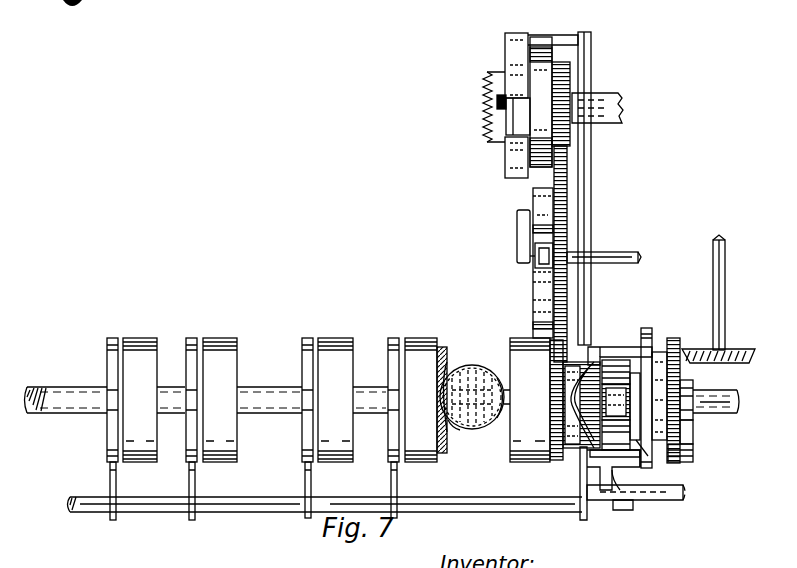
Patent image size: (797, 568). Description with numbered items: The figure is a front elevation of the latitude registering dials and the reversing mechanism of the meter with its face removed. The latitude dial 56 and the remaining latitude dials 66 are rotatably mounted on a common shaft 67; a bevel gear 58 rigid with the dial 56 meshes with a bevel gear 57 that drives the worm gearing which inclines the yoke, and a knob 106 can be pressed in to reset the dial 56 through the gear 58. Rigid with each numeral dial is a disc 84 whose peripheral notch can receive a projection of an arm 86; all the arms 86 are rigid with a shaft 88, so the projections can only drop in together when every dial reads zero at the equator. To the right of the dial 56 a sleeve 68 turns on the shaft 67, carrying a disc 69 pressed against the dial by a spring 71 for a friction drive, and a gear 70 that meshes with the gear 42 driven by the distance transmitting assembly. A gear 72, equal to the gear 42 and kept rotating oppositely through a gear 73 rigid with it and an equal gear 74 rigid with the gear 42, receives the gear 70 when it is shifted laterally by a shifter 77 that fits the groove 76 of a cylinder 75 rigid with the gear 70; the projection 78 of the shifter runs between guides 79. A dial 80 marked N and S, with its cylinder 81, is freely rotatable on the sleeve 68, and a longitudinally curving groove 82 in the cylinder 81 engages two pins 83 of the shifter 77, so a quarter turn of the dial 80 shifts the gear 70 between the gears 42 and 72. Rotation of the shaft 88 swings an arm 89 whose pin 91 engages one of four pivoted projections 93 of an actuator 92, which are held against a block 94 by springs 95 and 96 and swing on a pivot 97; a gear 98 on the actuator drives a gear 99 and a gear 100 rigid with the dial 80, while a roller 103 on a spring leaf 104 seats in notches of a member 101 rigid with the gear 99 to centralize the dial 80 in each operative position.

The gear 42 is at (692, 440).
The latitude dial 56 is at (426, 338).
The bevel gear 57 is at (500, 375).
The bevel gear 58 is at (442, 348).
The latitude dials 66 is at (151, 338).
The shaft 67 is at (258, 393).
The sleeve 68 is at (696, 388).
The disc 69 is at (447, 364).
The gear 70 is at (680, 458).
The spring 71 is at (505, 425).
The gear 72 is at (646, 328).
The gear 73 is at (663, 345).
The gear 74 is at (636, 388).
The cylinder 75 is at (630, 430).
The circumferential groove 76 is at (650, 450).
The shifter 77 is at (637, 468).
The projection 78 is at (625, 511).
The guides 79 is at (662, 501).
The dial 80 is at (522, 338).
The cylinder 81 is at (566, 450).
The groove 82 is at (576, 406).
The pins 83 is at (593, 355).
The disc 84 is at (111, 339).
The arm 86 is at (188, 471).
The shaft 88 is at (262, 505).
The arm 89 is at (592, 145).
The pin 91 is at (572, 24).
The actuator 92 is at (538, 40).
The projections 93 is at (505, 52).
The block 94 is at (513, 121).
The spring 95 is at (486, 90).
The spring 96 is at (497, 104).
The pivot 97 is at (505, 65).
The gear 98 is at (571, 76).
The gear 99 is at (568, 186).
The gear 100 is at (546, 379).
The member 101 is at (533, 203).
The roller 103 is at (535, 264).
The spring leaf 104 is at (517, 241).
The knob 106 is at (452, 426).